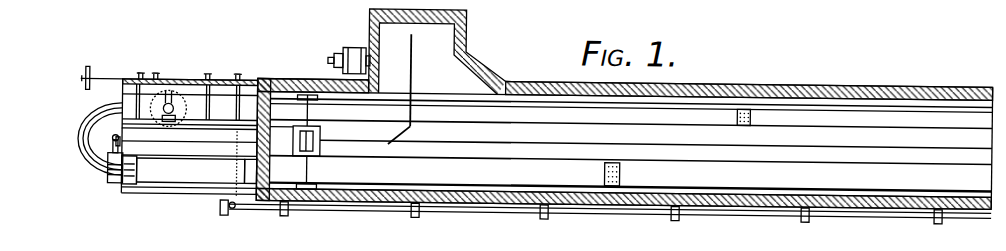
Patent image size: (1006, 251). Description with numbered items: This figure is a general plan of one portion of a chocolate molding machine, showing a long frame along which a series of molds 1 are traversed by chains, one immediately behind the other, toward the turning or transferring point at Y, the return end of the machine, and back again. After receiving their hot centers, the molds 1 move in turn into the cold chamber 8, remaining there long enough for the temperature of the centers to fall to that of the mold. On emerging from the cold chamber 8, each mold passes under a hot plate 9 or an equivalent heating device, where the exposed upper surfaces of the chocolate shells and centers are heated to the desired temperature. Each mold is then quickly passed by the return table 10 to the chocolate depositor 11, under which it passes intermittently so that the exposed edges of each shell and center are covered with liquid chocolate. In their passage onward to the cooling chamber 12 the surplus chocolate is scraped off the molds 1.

The molds 1 is at (752, 113).
The cold chamber 8 is at (795, 177).
The hot plate 9 is at (190, 170).
The return table 10 is at (94, 117).
The chocolate depositor 11 is at (178, 101).
The cooling chamber 12 is at (537, 112).
The turning or transferring point Y is at (89, 158).